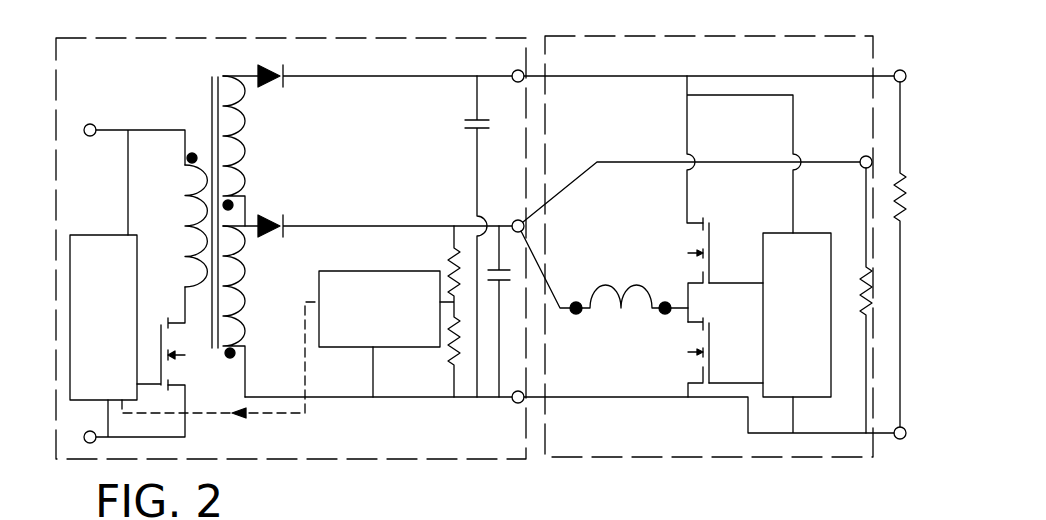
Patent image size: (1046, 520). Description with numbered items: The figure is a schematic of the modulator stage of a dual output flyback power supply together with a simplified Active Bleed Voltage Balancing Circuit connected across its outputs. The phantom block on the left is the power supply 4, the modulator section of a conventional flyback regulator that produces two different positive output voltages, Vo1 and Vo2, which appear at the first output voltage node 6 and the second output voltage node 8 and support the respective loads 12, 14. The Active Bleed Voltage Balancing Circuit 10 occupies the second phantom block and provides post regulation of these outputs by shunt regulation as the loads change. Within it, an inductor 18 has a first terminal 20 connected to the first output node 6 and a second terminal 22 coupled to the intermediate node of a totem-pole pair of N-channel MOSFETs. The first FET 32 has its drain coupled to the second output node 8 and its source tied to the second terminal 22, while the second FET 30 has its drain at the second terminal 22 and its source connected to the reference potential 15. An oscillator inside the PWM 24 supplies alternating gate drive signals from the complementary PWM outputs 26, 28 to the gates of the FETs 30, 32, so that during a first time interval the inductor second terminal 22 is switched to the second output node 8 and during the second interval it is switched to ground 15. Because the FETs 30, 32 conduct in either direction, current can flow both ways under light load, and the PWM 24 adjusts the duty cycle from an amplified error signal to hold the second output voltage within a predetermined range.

The power supply 4 is at (66, 84).
The first output voltage node 6 is at (862, 156).
The second output voltage node 8 is at (898, 69).
The Active Bleed Voltage Balancing Circuit 10 is at (580, 438).
The load 12 is at (866, 274).
The load 14 is at (897, 197).
The reference potential 15 is at (516, 404).
The inductor 18 is at (618, 284).
The first terminal 20 is at (580, 302).
The second terminal 22 is at (666, 301).
The PWM 24 is at (783, 359).
The PWM output 26 is at (753, 378).
The PWM output 28 is at (753, 279).
The second FET 30 is at (699, 351).
The first FET 32 is at (701, 250).